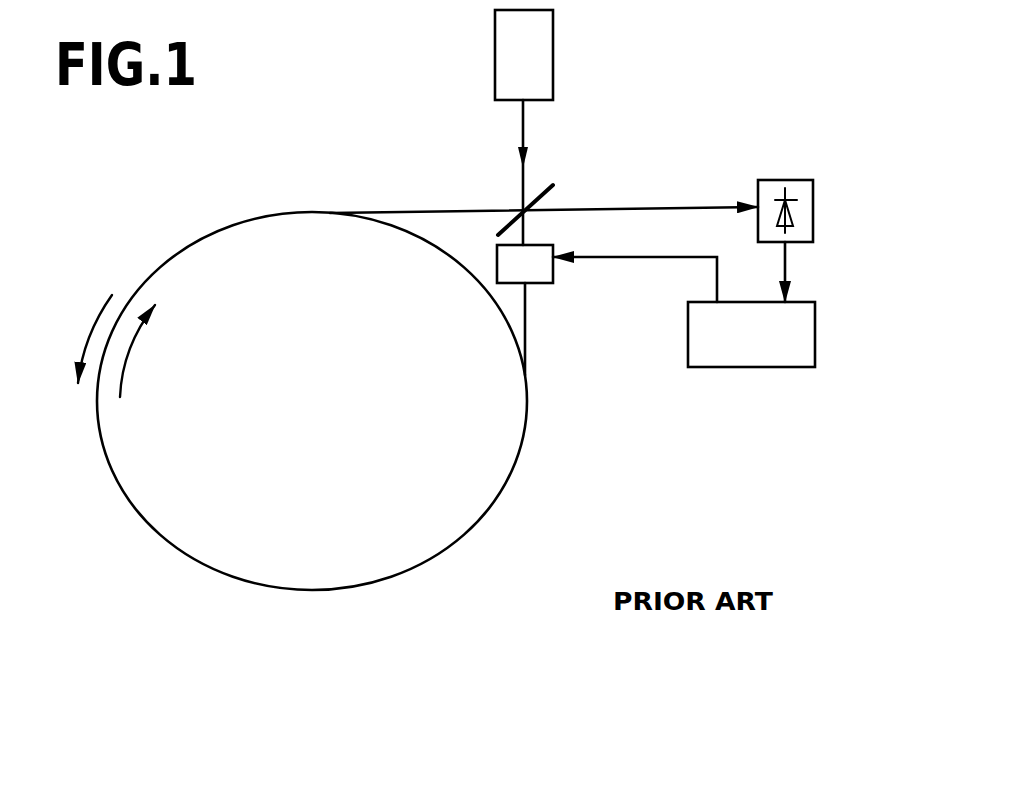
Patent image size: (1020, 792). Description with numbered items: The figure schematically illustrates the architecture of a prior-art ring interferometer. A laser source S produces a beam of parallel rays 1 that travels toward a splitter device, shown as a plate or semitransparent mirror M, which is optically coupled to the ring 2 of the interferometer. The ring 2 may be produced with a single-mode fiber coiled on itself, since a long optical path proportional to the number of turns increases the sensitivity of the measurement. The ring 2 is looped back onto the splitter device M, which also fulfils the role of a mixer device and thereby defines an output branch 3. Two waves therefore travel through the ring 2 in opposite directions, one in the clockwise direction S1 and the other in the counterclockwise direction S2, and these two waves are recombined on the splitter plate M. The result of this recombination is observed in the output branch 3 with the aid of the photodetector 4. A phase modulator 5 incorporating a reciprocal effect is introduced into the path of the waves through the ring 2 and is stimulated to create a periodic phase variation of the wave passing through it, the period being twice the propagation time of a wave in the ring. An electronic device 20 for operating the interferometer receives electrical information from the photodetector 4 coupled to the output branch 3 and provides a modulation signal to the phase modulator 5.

The laser source S is at (554, 50).
The beam of parallel rays 1 is at (527, 125).
The semitransparent mirror M is at (548, 195).
The output branch 3 is at (655, 208).
The photodetector 4 is at (781, 180).
The phase modulator 5 is at (537, 285).
The electronic device 20 is at (817, 288).
The ring 2 is at (505, 485).
The clockwise direction S1 is at (88, 336).
The counterclockwise direction S2 is at (130, 353).